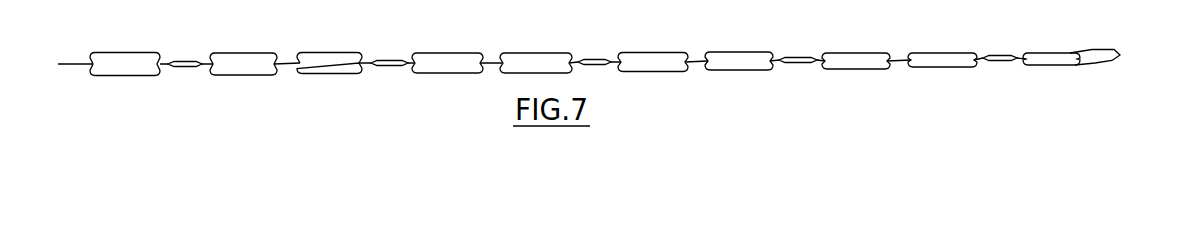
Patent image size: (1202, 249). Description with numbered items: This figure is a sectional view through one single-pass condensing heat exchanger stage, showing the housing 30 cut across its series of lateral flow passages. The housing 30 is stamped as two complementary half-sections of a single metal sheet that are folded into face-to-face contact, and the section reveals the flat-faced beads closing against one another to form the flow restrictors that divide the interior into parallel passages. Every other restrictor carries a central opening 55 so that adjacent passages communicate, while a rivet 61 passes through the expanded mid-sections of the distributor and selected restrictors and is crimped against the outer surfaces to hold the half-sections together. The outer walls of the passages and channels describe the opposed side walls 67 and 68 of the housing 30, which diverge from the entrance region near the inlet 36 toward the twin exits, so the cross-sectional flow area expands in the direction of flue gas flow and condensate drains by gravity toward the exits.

The housing 30 is at (933, 48).
The inlet 36 is at (1113, 56).
The central opening 55 is at (748, 57).
The rivet 61 is at (603, 64).
The side wall 67 is at (327, 53).
The side wall 68 is at (332, 74).